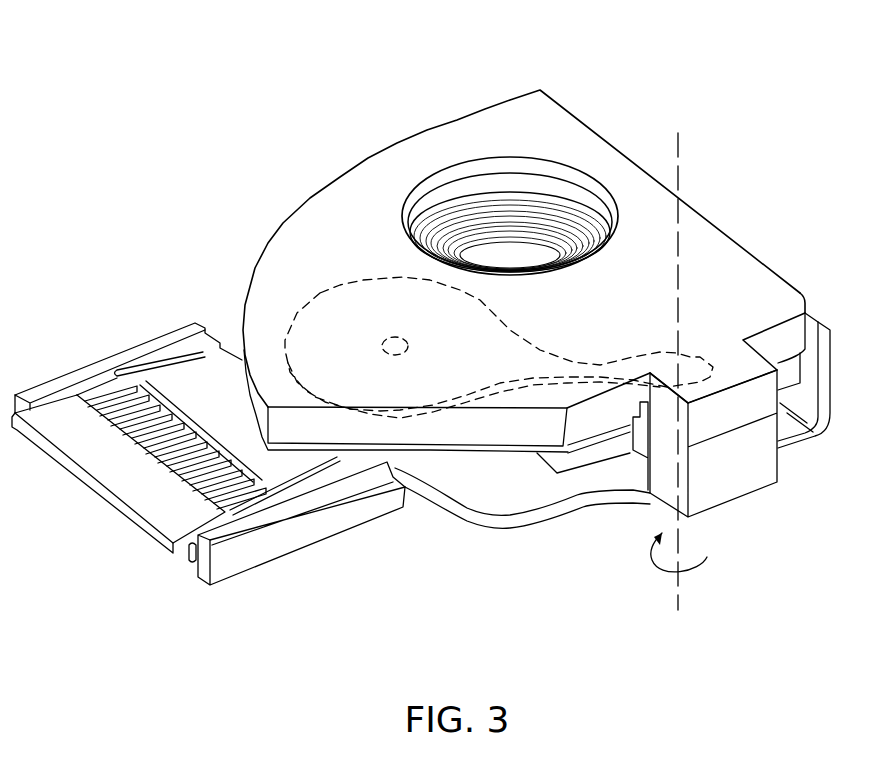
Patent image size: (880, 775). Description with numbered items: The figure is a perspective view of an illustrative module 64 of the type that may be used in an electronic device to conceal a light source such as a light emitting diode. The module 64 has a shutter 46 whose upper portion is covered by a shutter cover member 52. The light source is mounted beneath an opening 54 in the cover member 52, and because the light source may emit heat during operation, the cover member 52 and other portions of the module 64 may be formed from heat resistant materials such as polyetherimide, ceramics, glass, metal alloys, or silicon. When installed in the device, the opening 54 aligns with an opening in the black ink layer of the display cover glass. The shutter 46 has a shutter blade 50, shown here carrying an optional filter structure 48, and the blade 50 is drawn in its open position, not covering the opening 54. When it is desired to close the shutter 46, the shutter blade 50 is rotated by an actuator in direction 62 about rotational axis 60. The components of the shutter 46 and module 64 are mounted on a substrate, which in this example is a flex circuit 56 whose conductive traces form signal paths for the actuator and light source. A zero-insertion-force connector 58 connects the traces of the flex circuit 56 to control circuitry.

The shutter 46 is at (641, 114).
The filter structure 48 is at (395, 338).
The shutter blade 50 is at (320, 293).
The shutter cover member 52 is at (513, 112).
The opening 54 is at (470, 172).
The flex circuit 56 is at (508, 518).
The zero-insertion-force (ZIF) connector 58 is at (293, 538).
The rotational axis 60 is at (678, 172).
The direction 62 is at (697, 565).
The module 64 is at (283, 96).